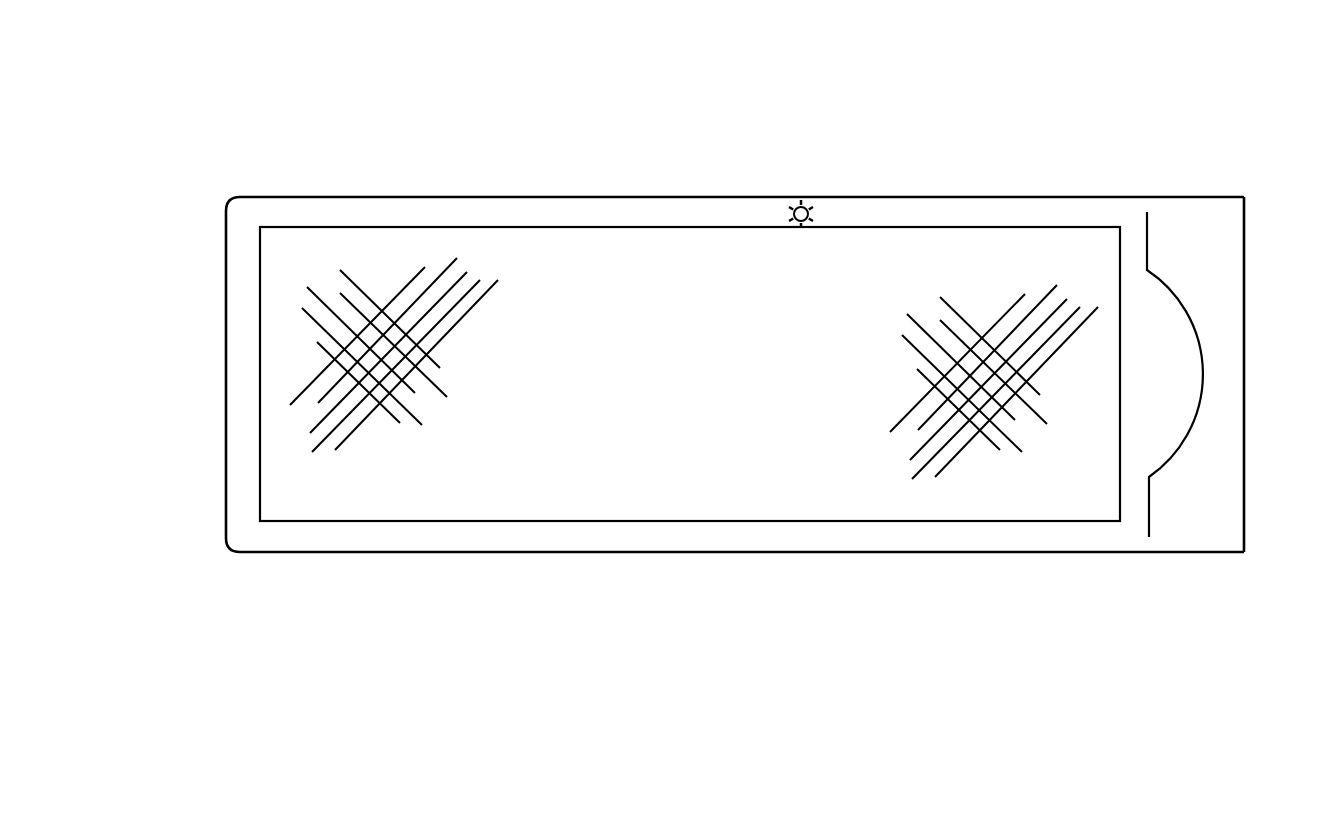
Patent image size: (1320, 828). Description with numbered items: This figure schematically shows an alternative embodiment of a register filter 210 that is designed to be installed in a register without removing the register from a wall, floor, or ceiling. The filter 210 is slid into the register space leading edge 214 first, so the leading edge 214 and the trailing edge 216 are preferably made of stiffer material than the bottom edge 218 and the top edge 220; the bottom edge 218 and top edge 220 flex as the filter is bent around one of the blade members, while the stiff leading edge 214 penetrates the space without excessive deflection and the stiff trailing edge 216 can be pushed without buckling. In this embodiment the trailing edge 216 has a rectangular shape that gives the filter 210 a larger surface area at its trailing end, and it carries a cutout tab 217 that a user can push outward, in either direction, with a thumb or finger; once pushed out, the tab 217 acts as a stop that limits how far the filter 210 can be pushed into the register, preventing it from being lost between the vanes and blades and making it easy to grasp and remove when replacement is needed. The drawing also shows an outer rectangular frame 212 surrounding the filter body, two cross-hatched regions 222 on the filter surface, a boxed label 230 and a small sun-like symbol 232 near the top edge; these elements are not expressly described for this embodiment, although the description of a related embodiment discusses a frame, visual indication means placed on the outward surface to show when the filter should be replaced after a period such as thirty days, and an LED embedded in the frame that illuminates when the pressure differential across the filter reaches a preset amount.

The filter 210 is at (946, 120).
The housing 212 is at (1050, 185).
The leading edge 214 is at (215, 352).
The trailing edge 216 is at (1230, 185).
The cutout tab 217 is at (1195, 442).
The bottom edge 218 is at (842, 557).
The top edge 220 is at (455, 192).
The hatched region 222 is at (967, 470).
The display area 230 is at (532, 369).
The sensor 232 is at (805, 190).